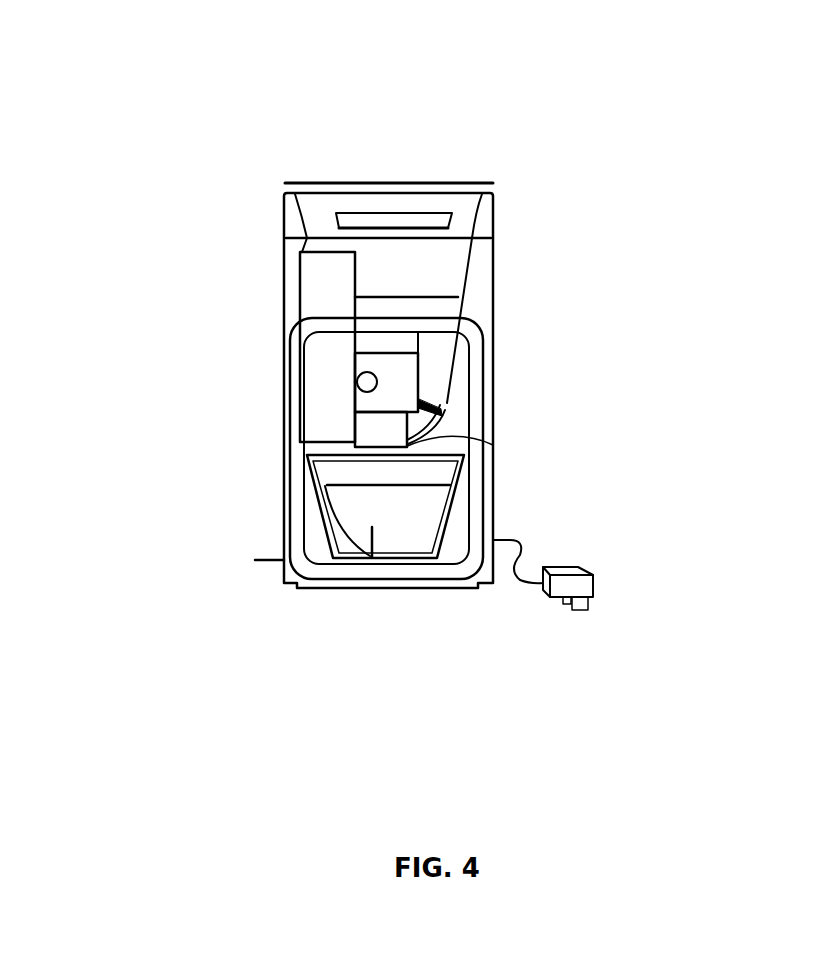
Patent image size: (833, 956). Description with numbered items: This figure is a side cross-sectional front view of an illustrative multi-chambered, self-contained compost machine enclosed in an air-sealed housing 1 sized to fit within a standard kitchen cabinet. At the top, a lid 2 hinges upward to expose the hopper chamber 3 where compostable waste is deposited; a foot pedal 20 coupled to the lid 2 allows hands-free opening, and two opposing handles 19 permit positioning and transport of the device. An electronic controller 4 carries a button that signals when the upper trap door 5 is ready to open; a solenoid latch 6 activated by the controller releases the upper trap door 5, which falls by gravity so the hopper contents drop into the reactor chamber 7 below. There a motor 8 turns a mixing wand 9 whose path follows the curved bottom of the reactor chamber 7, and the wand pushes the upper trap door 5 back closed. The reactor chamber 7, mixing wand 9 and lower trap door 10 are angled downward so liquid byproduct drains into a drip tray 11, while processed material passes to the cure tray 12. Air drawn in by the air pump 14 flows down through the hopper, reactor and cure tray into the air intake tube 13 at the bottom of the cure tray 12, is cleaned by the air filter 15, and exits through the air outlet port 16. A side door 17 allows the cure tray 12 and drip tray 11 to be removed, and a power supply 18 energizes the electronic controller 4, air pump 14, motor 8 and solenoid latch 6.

The housing 1 is at (291, 218).
The lid 2 is at (318, 181).
The hopper chamber 3 is at (381, 203).
The electronic controller 4 is at (402, 220).
The upper trap door 5 is at (422, 295).
The solenoid latch 6 is at (388, 343).
The reactor chamber 7 is at (433, 358).
The motor 8 is at (360, 380).
The mixing wand 9 is at (408, 438).
The lower trap door 10 is at (408, 443).
The drip tray 11 is at (402, 505).
The cure tray 12 is at (412, 472).
The air intake tube 13 is at (380, 543).
The air pump 14 is at (373, 433).
The air filter 15 is at (330, 390).
The air outlet port 16 is at (493, 445).
The side door 17 is at (291, 581).
The power supply 18 is at (568, 588).
The handles 19 is at (285, 235).
The foot pedal 20 is at (235, 563).